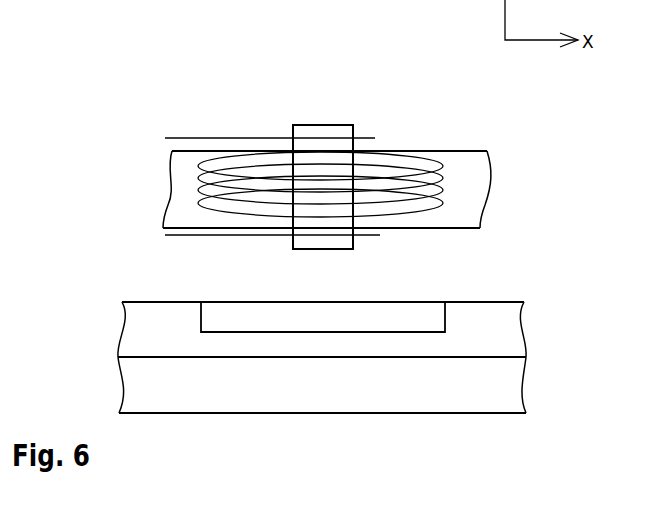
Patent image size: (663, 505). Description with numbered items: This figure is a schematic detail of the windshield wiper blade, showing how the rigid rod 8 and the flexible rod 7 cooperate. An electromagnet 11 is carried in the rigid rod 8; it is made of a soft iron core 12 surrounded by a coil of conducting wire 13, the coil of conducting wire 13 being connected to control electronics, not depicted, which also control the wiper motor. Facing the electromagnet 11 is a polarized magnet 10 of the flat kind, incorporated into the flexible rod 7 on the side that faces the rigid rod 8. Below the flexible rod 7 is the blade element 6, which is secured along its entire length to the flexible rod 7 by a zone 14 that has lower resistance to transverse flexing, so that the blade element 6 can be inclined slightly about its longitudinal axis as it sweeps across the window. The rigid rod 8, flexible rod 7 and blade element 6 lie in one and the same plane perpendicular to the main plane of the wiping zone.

The blade element 6 is at (500, 390).
The flexible rod 7 is at (488, 335).
The rigid rod 8 is at (464, 158).
The polarized magnet 10 is at (419, 318).
The electromagnet 11 is at (353, 34).
The soft iron core 12 is at (318, 125).
The coil of conducting wire 13 is at (375, 138).
The zone of lower resistance to transverse flexing 14 is at (400, 358).